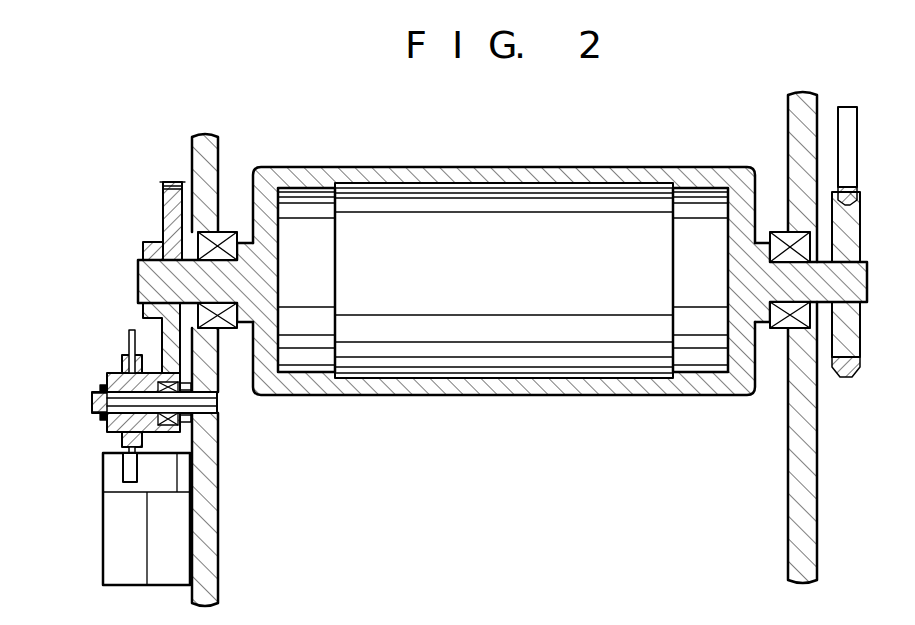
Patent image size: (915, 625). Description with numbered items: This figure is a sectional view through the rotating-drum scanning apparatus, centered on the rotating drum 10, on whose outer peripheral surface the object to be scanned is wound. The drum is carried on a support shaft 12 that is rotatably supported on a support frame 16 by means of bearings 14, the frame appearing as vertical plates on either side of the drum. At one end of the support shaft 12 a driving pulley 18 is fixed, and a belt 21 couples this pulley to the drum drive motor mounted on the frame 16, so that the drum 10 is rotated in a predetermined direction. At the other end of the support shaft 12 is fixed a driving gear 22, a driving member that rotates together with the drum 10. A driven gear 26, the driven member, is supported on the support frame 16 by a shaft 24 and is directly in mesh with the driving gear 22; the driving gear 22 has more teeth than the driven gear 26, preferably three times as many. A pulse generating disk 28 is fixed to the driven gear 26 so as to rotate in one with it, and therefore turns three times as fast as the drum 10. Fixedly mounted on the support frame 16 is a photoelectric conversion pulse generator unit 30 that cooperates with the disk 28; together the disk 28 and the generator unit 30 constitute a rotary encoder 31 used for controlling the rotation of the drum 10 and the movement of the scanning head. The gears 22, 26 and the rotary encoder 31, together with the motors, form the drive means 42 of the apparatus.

The rotating drum 10 is at (565, 170).
The support shaft 12 is at (142, 275).
The bearings 14 is at (223, 240).
The support frame 16 is at (217, 526).
The driving pulley 18 is at (857, 225).
The belt 21 is at (852, 143).
The driving gear 22 is at (168, 223).
The shaft 24 is at (97, 402).
The driven gear 26 is at (169, 437).
The pulse generating disk 28 is at (131, 336).
The photoelectric conversion pulse generator unit 30 is at (112, 537).
The rotary encoder 31 is at (100, 458).
The drive means 42 is at (153, 182).